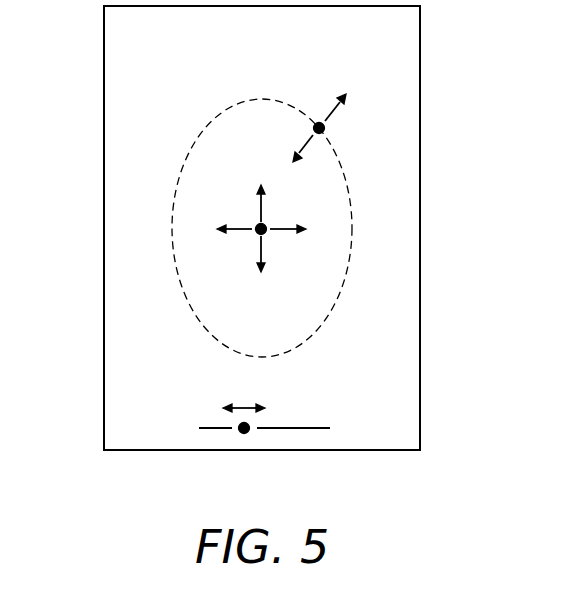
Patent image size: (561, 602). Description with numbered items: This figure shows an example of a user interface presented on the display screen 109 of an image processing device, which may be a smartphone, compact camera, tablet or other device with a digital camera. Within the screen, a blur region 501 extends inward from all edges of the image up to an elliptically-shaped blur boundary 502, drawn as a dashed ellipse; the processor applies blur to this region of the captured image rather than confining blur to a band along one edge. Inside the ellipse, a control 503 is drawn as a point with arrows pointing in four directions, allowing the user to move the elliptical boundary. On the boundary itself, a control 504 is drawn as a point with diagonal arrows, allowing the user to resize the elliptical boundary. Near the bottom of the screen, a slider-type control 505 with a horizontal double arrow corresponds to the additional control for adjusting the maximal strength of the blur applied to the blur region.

The display screen 109 is at (302, 228).
The blur region 501 is at (163, 43).
The blur boundary 502 is at (170, 238).
The control to move the elliptical boundary 503 is at (257, 226).
The control to resize the elliptical boundary 504 is at (318, 122).
The slider control point 505 is at (244, 434).